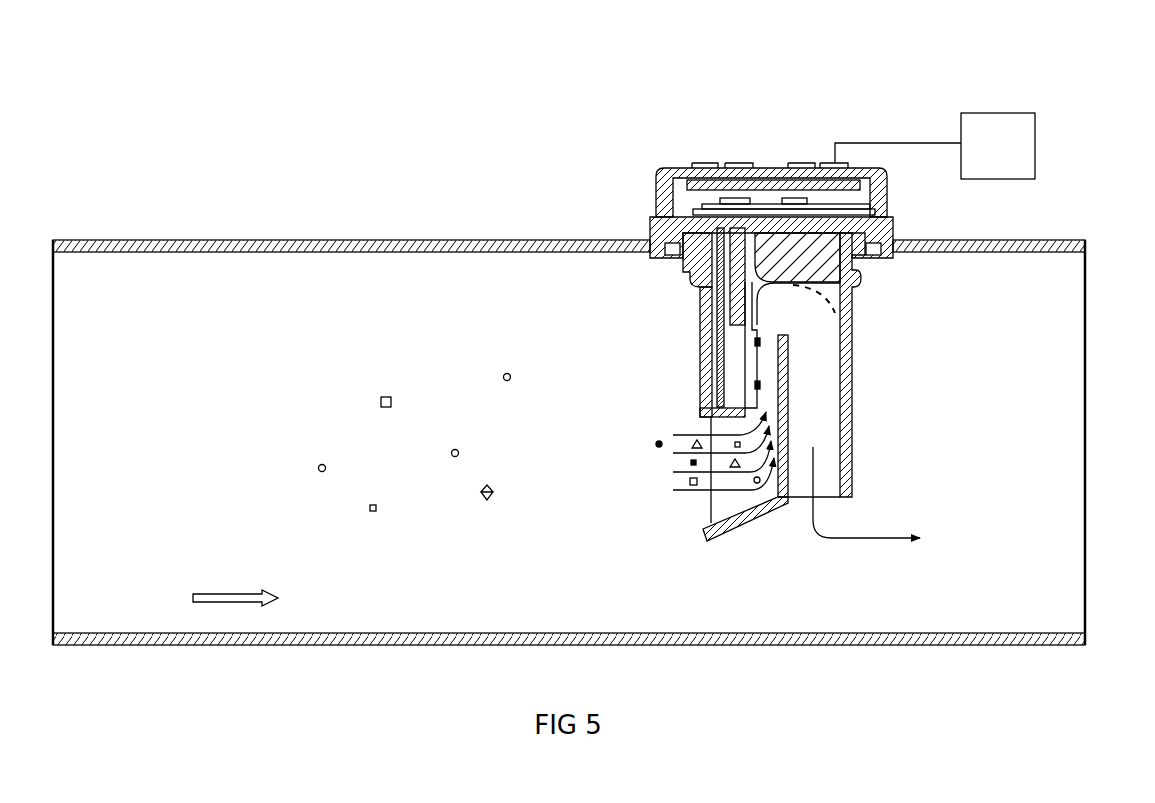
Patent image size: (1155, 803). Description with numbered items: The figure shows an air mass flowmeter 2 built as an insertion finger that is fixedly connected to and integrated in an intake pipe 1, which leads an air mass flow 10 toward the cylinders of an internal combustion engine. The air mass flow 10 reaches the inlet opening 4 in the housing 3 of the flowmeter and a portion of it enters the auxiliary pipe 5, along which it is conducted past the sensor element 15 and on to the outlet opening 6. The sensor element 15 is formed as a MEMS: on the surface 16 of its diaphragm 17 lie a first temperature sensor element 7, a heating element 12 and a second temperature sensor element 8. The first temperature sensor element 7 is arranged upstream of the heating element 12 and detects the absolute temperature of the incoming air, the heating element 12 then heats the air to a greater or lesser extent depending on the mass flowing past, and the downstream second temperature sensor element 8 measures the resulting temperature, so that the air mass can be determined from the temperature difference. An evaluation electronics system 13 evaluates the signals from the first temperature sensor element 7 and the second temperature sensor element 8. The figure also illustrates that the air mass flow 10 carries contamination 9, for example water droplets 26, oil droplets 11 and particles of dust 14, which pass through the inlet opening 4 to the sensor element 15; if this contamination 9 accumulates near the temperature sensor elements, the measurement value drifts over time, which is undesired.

The intake pipe 1 is at (372, 240).
The air mass flowmeter 2 is at (890, 207).
The housing 3 is at (893, 237).
The inlet opening 4 is at (670, 466).
The auxiliary pipe 5 is at (852, 437).
The outlet opening 6 is at (800, 508).
The first temperature sensor element 7 is at (789, 400).
The second temperature sensor element 8 is at (762, 340).
The contamination 9 is at (432, 390).
The air mass flow 10 is at (226, 594).
The oil droplets 11 is at (503, 377).
The heating element 12 is at (748, 368).
The evaluation electronics system 13 is at (740, 204).
The particles of dust 14 is at (1035, 143).
The sensor element 15 is at (760, 320).
The surface 16 is at (762, 384).
The diaphragm 17 is at (742, 348).
The water droplets 26 is at (487, 503).